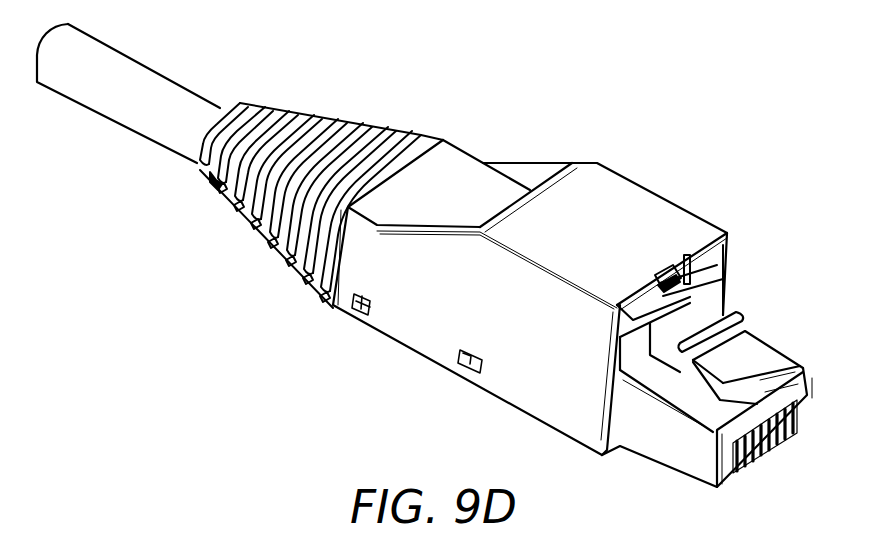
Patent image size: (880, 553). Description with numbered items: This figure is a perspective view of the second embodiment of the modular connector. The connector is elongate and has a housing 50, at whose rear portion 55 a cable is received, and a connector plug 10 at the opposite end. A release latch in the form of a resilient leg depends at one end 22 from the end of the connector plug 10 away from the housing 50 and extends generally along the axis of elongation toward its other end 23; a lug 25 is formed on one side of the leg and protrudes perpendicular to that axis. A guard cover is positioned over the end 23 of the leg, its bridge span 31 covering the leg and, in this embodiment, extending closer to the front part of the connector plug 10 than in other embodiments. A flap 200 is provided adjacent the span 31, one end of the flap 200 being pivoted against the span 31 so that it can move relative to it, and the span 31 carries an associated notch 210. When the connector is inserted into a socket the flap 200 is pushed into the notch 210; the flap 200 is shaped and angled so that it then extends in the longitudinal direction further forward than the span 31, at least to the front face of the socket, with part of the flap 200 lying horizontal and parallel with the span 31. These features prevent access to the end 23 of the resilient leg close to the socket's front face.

The connector plug 10 is at (771, 466).
The end of the resilient leg 22 is at (780, 365).
The end of the resilient leg 23 is at (747, 340).
The lug 25 is at (733, 313).
The span 31 is at (621, 194).
The housing 50 is at (527, 380).
The rear portion 55 is at (243, 250).
The flap 200 is at (687, 255).
The notch 210 is at (668, 273).